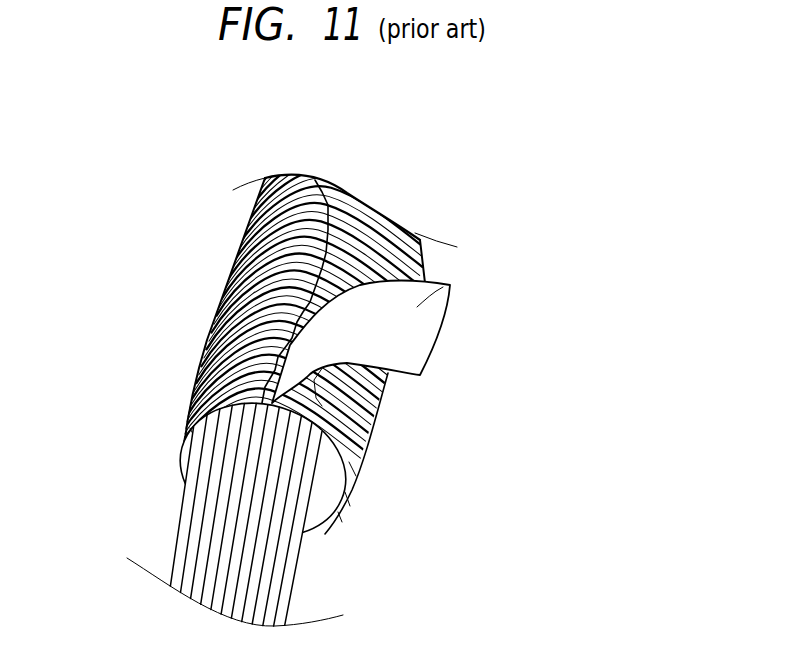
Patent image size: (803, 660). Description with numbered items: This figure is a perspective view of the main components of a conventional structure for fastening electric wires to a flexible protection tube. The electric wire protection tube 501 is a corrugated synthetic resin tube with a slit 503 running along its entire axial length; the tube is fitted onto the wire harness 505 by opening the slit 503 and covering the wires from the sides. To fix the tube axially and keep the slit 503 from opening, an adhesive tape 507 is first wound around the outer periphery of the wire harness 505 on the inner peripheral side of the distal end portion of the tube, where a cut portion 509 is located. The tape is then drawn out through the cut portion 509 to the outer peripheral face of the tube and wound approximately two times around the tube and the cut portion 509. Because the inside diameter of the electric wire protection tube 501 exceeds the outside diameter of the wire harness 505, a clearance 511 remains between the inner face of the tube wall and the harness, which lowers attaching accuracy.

The electric wire protection tube 501 is at (236, 214).
The slit 503 is at (315, 180).
The wire harness 505 is at (293, 563).
The adhesive tape 507 is at (446, 284).
The cut portion 509 is at (287, 330).
The clearance 511 is at (186, 470).